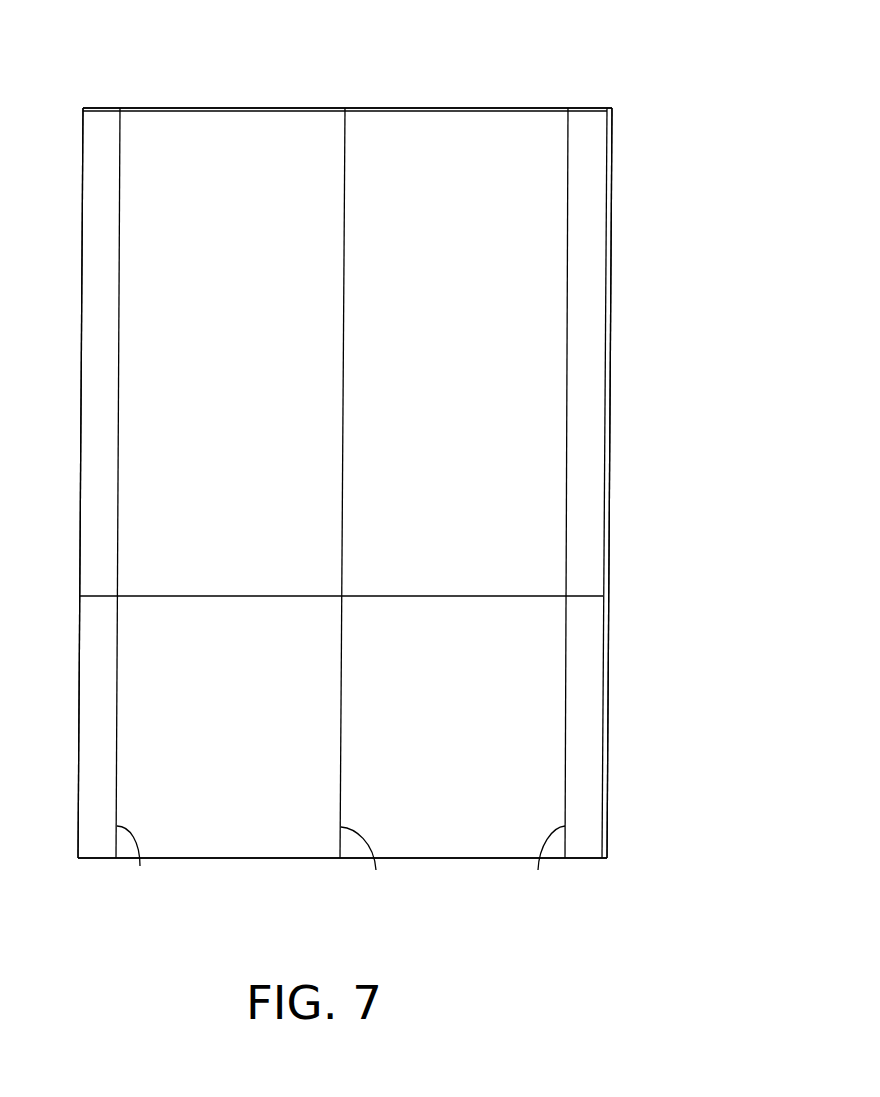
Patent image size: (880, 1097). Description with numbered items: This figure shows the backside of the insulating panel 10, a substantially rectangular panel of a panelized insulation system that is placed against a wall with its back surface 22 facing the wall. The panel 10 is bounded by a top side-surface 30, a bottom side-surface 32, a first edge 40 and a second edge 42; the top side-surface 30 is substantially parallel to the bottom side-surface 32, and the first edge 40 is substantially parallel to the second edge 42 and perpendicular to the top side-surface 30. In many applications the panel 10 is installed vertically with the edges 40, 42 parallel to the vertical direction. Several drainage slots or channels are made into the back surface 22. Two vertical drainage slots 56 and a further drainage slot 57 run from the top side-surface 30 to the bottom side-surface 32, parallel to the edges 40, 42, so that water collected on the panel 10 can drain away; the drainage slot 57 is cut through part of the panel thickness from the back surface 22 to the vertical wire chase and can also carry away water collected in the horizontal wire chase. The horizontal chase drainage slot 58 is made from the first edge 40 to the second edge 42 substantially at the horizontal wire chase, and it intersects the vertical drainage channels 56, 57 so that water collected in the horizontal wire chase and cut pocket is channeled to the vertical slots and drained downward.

The insulating panel 10 is at (378, 455).
The back surface 22 is at (250, 270).
The top side-surface 30 is at (306, 107).
The bottom side-surface 32 is at (275, 859).
The first edge 40 is at (81, 303).
The second edge 42 is at (610, 277).
The vertical drainage slot 56 is at (341, 866).
The drainage slot 57 is at (367, 867).
The horizontal chase drainage slot 58 is at (466, 597).